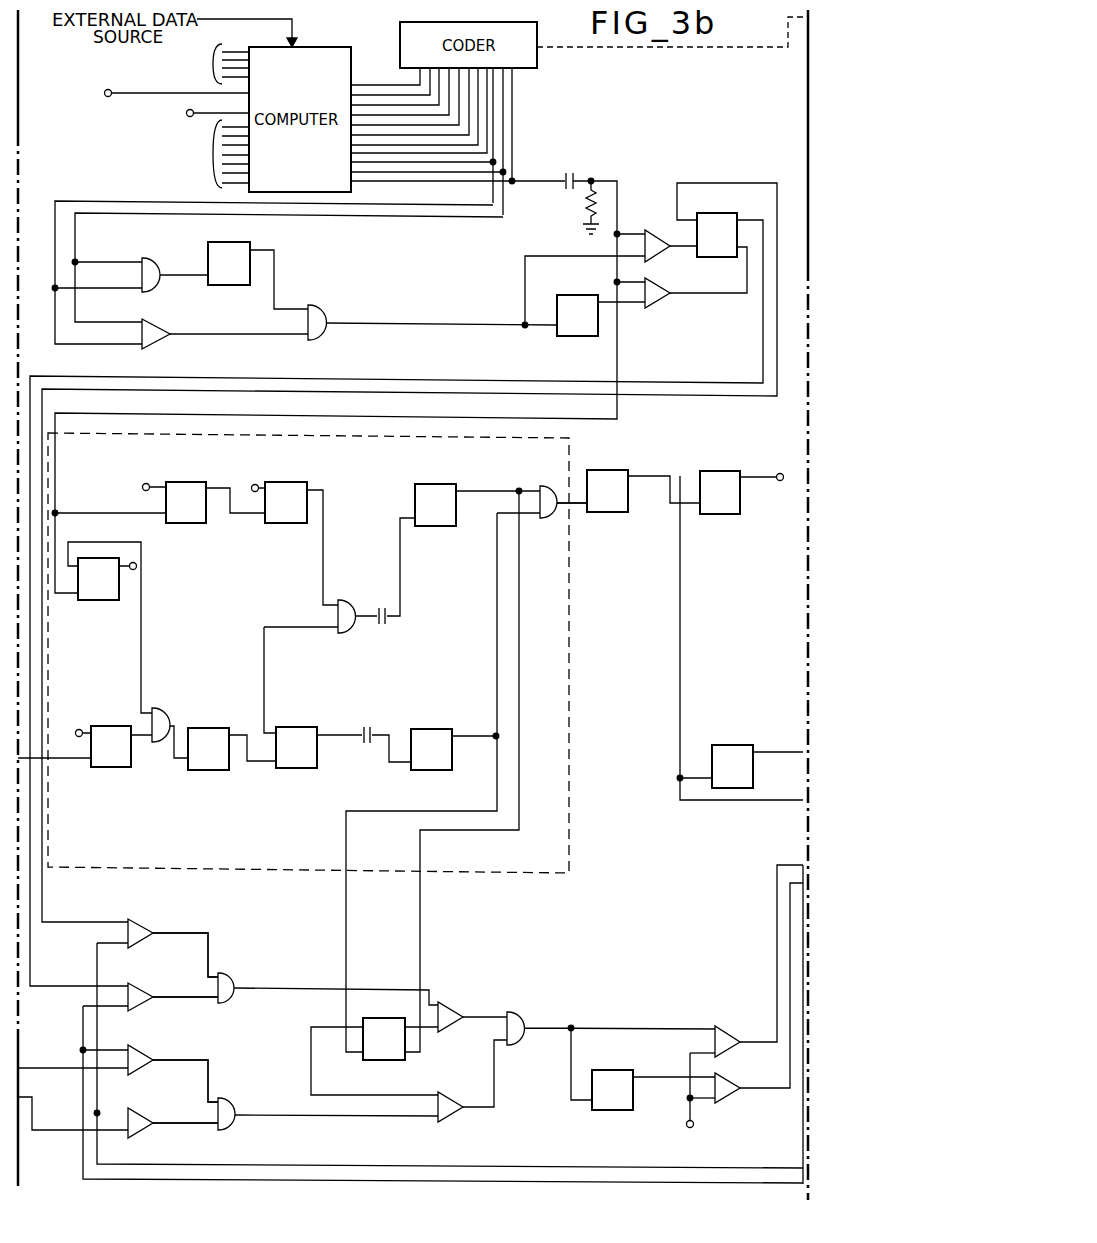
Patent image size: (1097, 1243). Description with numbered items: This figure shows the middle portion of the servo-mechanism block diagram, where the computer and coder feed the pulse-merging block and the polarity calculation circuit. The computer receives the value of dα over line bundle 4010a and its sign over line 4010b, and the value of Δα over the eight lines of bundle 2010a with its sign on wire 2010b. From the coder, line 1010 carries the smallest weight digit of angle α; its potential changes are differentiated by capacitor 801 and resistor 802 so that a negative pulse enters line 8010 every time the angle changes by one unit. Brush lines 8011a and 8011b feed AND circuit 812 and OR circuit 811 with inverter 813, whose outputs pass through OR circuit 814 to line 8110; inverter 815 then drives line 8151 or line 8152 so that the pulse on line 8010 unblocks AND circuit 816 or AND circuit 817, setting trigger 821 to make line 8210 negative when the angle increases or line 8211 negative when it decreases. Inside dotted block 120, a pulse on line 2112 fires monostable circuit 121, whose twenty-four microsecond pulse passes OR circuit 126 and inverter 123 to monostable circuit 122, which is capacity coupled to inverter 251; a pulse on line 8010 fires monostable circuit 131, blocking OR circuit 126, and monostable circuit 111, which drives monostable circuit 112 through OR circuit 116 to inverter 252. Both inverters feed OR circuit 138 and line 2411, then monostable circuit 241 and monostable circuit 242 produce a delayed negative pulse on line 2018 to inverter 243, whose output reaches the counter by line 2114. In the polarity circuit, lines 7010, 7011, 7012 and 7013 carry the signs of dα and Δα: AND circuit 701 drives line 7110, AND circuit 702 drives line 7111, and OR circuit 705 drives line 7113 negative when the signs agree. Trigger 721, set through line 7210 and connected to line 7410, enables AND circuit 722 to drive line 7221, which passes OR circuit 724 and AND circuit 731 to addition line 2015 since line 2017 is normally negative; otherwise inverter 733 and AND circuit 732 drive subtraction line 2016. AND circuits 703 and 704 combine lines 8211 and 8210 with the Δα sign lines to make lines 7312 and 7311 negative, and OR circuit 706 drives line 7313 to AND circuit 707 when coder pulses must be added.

The line bundle 4010a is at (194, 64).
The line 4010b is at (147, 94).
The line bundle 2010a is at (197, 154).
The wire 2010b is at (188, 115).
The line 1010 is at (512, 122).
The capacitor 801 is at (575, 183).
The resistor 802 is at (585, 206).
The line 8010 is at (617, 199).
The line 8011a is at (438, 224).
The line 8011b is at (462, 207).
The OR circuit 811 is at (157, 272).
The AND circuit 812 is at (160, 334).
The inverter 813 is at (235, 251).
The OR circuit 814 is at (327, 316).
The inverter 815 is at (580, 298).
The line 8151 is at (628, 303).
The line 8152 is at (523, 265).
The AND circuit 816 is at (668, 298).
The AND circuit 817 is at (663, 258).
The trigger 821 is at (725, 213).
The line 8210 is at (762, 330).
The line 8211 is at (737, 185).
The line 8110 is at (480, 325).
The dotted block 120 is at (572, 718).
The monostable circuit 111 is at (184, 489).
The monostable circuit 112 is at (286, 489).
The monostable circuit 131 is at (113, 590).
The OR circuit 116 is at (355, 628).
The inverter 252 is at (440, 488).
The OR circuit 138 is at (541, 490).
The line 2411 is at (570, 505).
The monostable circuit 241 is at (610, 478).
The monostable circuit 242 is at (722, 478).
The inverter 243 is at (732, 748).
The line 2018 is at (680, 600).
The line 2114 is at (784, 752).
The line 2112 is at (58, 758).
The monostable circuit 121 is at (99, 727).
The OR circuit 126 is at (167, 715).
The inverter 123 is at (205, 731).
The monostable circuit 122 is at (297, 731).
The inverter 251 is at (432, 734).
The line 7210 is at (347, 893).
The line 7410 is at (420, 917).
The line 7313 is at (352, 990).
The AND circuit 707 is at (452, 1012).
The trigger 721 is at (385, 1058).
The AND circuit 722 is at (450, 1112).
The line 7221 is at (494, 1092).
The OR circuit 724 is at (525, 1026).
The AND circuit 731 is at (722, 1035).
The AND circuit 732 is at (727, 1085).
The inverter 733 is at (615, 1072).
The addition line 2015 is at (778, 907).
The subtraction line 2016 is at (790, 925).
The line 2017 is at (691, 1100).
The AND circuit 703 is at (145, 933).
The AND circuit 704 is at (148, 995).
The AND circuit 702 is at (145, 1058).
The AND circuit 701 is at (145, 1120).
The OR circuit 705 is at (235, 1107).
The OR circuit 706 is at (235, 983).
The line 7312 is at (208, 959).
The line 7311 is at (205, 998).
The line 7111 is at (208, 1083).
The line 7110 is at (208, 1124).
The line 7011 is at (68, 1068).
The line 7010 is at (32, 1105).
The line 7013 is at (83, 1156).
The line 7012 is at (330, 1170).
The line 7113 is at (375, 1117).